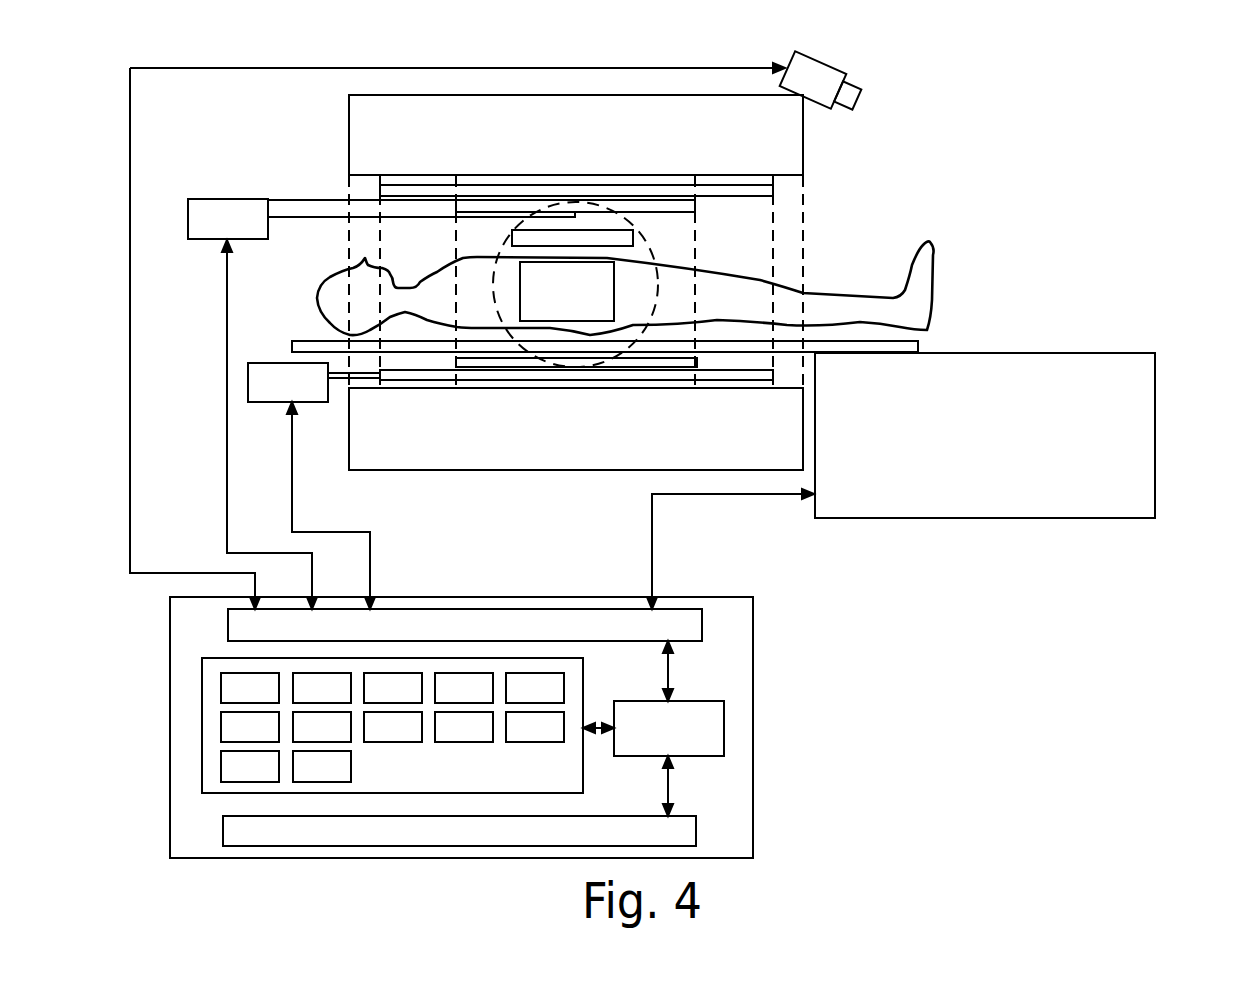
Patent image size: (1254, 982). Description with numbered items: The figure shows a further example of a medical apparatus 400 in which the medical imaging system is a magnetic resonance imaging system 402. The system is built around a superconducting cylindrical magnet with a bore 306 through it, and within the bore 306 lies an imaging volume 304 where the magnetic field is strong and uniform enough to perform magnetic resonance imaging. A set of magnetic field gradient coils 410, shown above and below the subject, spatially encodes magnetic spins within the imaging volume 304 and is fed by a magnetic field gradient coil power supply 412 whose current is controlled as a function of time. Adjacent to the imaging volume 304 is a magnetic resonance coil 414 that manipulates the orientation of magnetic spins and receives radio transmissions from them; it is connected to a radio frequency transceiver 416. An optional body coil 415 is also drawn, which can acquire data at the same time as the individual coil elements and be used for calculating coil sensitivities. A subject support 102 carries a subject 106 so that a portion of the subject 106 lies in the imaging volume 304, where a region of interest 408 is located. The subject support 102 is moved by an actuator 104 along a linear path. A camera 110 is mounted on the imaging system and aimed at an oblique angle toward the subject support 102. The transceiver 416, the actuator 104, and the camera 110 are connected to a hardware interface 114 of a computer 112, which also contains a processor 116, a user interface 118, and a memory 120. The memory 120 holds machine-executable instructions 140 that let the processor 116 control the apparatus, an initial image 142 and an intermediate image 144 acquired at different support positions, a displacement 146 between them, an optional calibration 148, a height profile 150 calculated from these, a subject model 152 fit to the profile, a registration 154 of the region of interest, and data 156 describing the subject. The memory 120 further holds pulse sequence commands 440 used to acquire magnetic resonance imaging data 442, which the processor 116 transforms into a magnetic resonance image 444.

The medical apparatus 400 is at (1065, 731).
The magnetic resonance imaging system 402 is at (349, 137).
The region of interest 408 is at (598, 322).
The magnetic field gradient coils 410 is at (487, 367).
The magnetic field gradient coil power supply 412 is at (314, 486).
The magnetic resonance coil 414 is at (585, 229).
The body coil 415 is at (478, 202).
The radio frequency transceiver 416 is at (381, 404).
The imaging volume 304 is at (652, 243).
The bore 306 is at (750, 228).
The subject support 102 is at (292, 343).
The actuator 104 is at (1157, 440).
The subject 106 is at (335, 268).
The camera 110 is at (830, 57).
The computer 112 is at (753, 658).
The hardware interface 114 is at (465, 625).
The processor 116 is at (653, 728).
The user interface 118 is at (459, 831).
The memory 120 is at (202, 727).
The machine-executable instructions 140 is at (250, 688).
The initial image 142 is at (322, 688).
The intermediate image 144 is at (393, 688).
The displacement 146 is at (464, 688).
The calibration 148 is at (535, 688).
The height profile 150 is at (250, 727).
The subject model 152 is at (322, 727).
The registration 154 is at (393, 727).
The data descriptive of the subject 156 is at (464, 727).
The pulse sequence commands 440 is at (535, 727).
The magnetic resonance imaging data 442 is at (250, 766).
The magnetic resonance image 444 is at (322, 766).